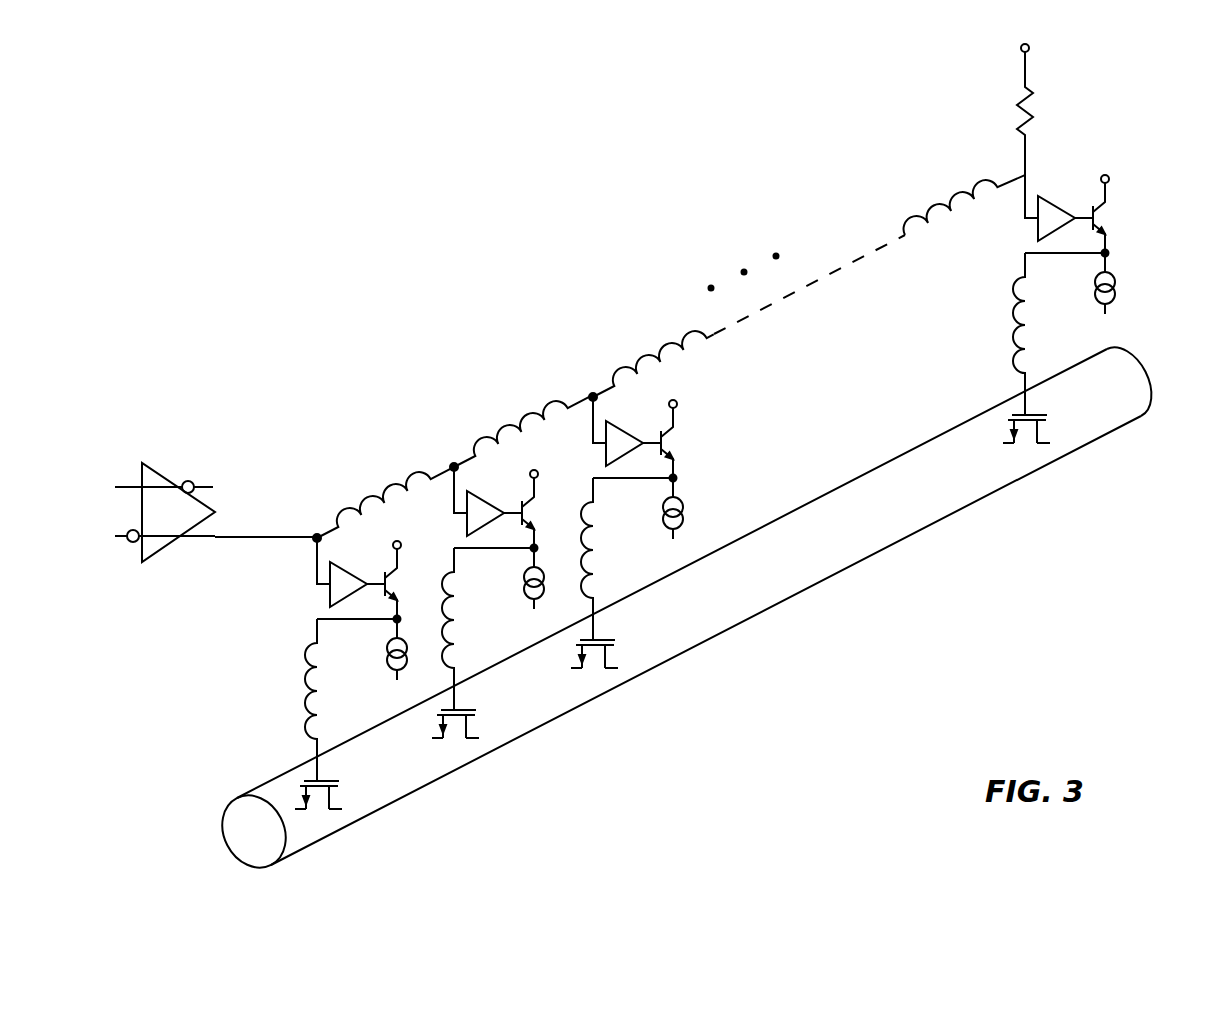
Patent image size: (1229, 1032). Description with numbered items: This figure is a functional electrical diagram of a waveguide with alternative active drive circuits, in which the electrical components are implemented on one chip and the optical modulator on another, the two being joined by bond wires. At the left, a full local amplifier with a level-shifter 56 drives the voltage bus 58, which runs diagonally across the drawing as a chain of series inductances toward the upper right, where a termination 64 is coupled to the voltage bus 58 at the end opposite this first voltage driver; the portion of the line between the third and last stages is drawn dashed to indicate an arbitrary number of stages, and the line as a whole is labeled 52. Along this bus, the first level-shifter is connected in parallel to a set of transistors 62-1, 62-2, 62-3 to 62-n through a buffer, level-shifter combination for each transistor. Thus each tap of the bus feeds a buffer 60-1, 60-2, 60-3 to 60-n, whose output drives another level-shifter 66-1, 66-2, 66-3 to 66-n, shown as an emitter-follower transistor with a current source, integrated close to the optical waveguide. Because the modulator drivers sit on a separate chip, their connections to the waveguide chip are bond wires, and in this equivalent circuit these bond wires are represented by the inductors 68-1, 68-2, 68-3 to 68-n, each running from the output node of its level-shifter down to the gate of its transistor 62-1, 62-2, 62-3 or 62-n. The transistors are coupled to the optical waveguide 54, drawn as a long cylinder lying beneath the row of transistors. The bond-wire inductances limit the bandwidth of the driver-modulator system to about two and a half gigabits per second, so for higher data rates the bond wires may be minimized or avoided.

The transmission line 52 is at (816, 278).
The optical waveguide 54 is at (892, 545).
The level-shifter 56 is at (166, 474).
The voltage bus 58 is at (232, 538).
The buffer 60-1 is at (327, 573).
The buffer 60-2 is at (462, 501).
The buffer 60-3 is at (595, 431).
The buffer 60-n is at (1030, 211).
The transistor 62-1 is at (357, 814).
The transistor 62-2 is at (494, 743).
The transistor 62-3 is at (633, 671).
The transistor 62-n is at (1068, 448).
The termination 64 is at (1050, 108).
The level-shifter 66-1 is at (396, 608).
The level-shifter 66-2 is at (524, 537).
The level-shifter 66-3 is at (689, 469).
The level-shifter 66-n is at (1124, 244).
The inductor 68-1 is at (279, 700).
The inductor 68-2 is at (490, 629).
The inductor 68-3 is at (626, 559).
The inductor 68-n is at (984, 334).